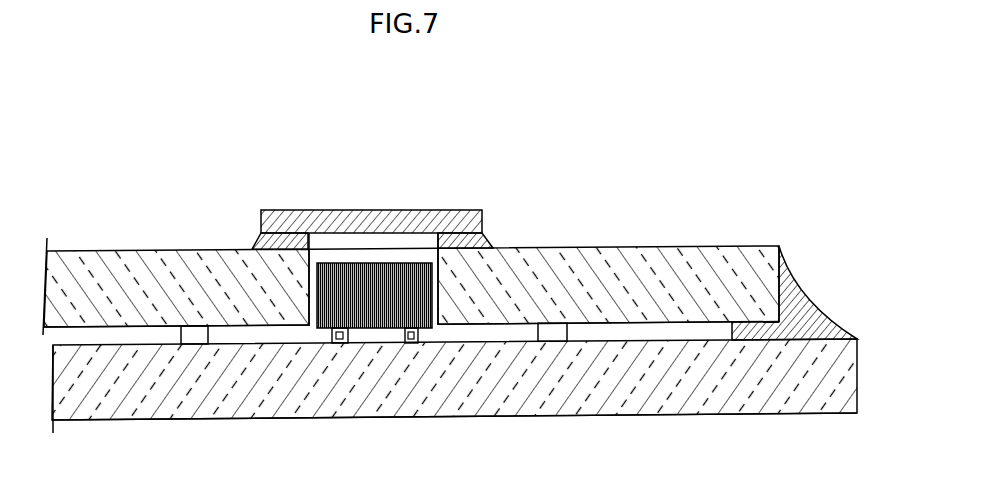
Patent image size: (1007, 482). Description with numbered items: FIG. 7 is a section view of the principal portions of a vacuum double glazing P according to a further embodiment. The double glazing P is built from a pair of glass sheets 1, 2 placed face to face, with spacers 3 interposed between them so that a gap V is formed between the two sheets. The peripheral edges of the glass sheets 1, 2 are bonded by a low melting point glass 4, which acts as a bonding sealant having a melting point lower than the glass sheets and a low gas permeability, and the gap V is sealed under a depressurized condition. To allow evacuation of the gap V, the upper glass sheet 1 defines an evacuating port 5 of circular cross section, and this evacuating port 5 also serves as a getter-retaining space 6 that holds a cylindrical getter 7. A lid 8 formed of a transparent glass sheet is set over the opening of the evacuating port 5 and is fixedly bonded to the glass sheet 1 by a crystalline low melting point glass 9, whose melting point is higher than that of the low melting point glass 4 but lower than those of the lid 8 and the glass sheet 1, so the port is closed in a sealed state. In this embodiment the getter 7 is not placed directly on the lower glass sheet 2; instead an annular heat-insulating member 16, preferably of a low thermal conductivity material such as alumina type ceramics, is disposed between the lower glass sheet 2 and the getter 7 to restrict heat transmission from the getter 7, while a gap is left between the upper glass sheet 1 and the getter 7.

The glass sheet 1 is at (714, 250).
The glass sheet 2 is at (477, 387).
The spacer 3 is at (201, 347).
The low melting point glass 4 is at (812, 298).
The evacuating port 5 is at (373, 255).
The getter-retaining space 6 is at (355, 181).
The getter 7 is at (407, 263).
The lid 8 is at (393, 210).
The crystalline low melting point glass 9 is at (485, 239).
The heat-insulating member 16 is at (340, 341).
The gap V is at (280, 336).
The double glazing P is at (148, 423).